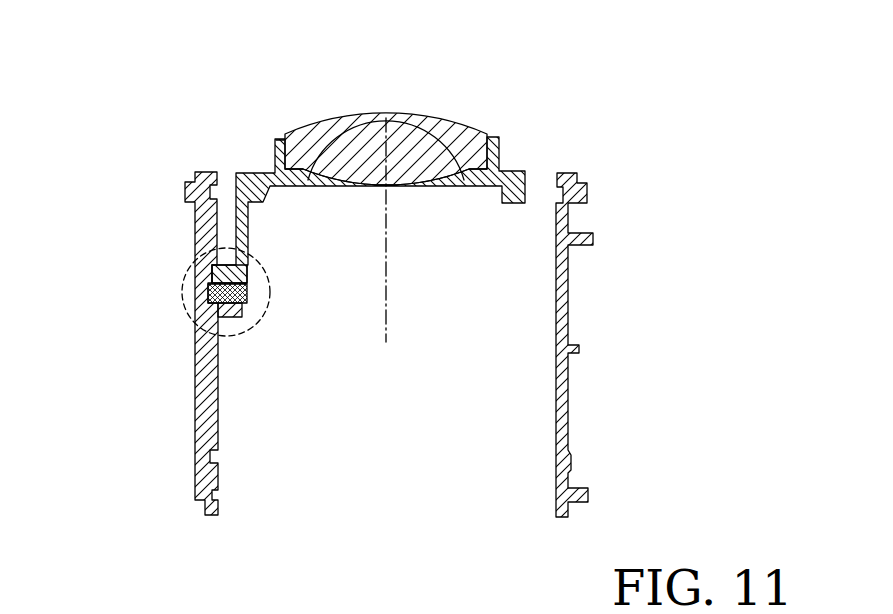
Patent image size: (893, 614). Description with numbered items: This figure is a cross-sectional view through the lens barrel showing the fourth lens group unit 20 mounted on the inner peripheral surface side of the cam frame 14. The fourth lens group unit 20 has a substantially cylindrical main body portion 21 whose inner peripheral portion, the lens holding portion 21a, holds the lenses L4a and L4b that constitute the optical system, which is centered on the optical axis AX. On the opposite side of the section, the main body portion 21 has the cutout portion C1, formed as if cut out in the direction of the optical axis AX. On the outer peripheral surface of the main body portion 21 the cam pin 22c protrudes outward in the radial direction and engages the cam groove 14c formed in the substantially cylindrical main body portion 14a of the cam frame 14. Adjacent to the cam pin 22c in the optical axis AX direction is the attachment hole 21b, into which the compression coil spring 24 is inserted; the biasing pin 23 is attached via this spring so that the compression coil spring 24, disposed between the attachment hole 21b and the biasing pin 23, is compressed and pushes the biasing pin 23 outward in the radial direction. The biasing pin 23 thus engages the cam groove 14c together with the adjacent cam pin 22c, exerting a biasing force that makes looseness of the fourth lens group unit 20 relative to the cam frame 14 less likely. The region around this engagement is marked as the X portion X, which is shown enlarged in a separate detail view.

The cam frame 14 is at (195, 167).
The main body portion 14a is at (205, 427).
The cam groove 14c is at (246, 306).
The fourth lens group unit 20 is at (287, 114).
The main body portion 21 is at (498, 156).
The lens holding portion 21a is at (490, 137).
The attachment hole 21b is at (232, 311).
The cam pin 22c is at (210, 280).
The biasing pin 23 is at (208, 292).
The compression coil spring 24 is at (248, 277).
The lens L4a is at (384, 114).
The lens L4b is at (434, 152).
The optical axis AX is at (390, 246).
The cutout portion C1 is at (488, 264).
The X portion X is at (266, 254).